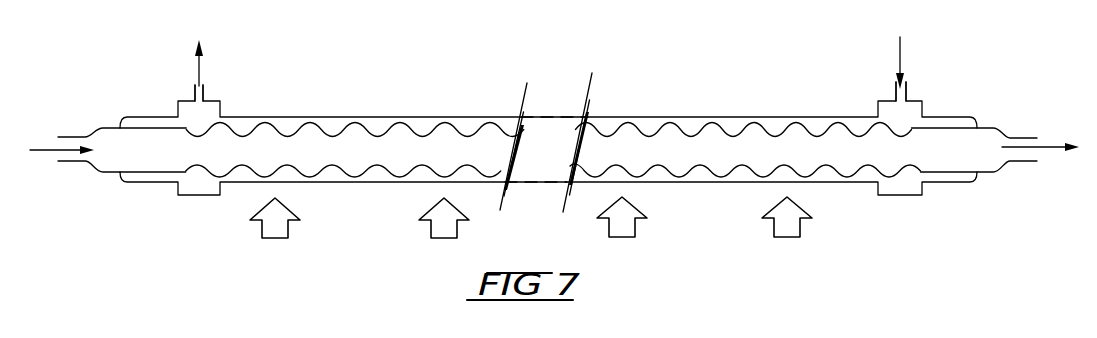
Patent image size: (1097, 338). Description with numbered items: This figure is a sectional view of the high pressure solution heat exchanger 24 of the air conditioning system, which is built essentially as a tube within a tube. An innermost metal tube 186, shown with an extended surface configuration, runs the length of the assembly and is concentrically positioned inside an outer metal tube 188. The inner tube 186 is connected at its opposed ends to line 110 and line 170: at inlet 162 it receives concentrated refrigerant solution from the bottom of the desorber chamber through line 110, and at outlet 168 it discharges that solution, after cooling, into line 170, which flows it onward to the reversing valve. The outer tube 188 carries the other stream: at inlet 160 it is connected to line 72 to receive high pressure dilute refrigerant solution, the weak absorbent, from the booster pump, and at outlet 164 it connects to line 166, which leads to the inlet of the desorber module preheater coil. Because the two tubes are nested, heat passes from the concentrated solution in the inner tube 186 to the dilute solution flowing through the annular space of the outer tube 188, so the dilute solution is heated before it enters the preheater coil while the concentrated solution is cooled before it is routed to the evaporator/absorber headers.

The high pressure solution heat exchanger 24 is at (726, 112).
The line 72 is at (902, 53).
The line 110 is at (45, 148).
The inlet 160 is at (910, 95).
The inlet 162 is at (86, 162).
The outlet 164 is at (205, 92).
The line 166 is at (197, 68).
The outlet 168 is at (1018, 163).
The line 170 is at (1048, 150).
The innermost metal tube 186 is at (404, 116).
The metal tube 188 is at (476, 116).